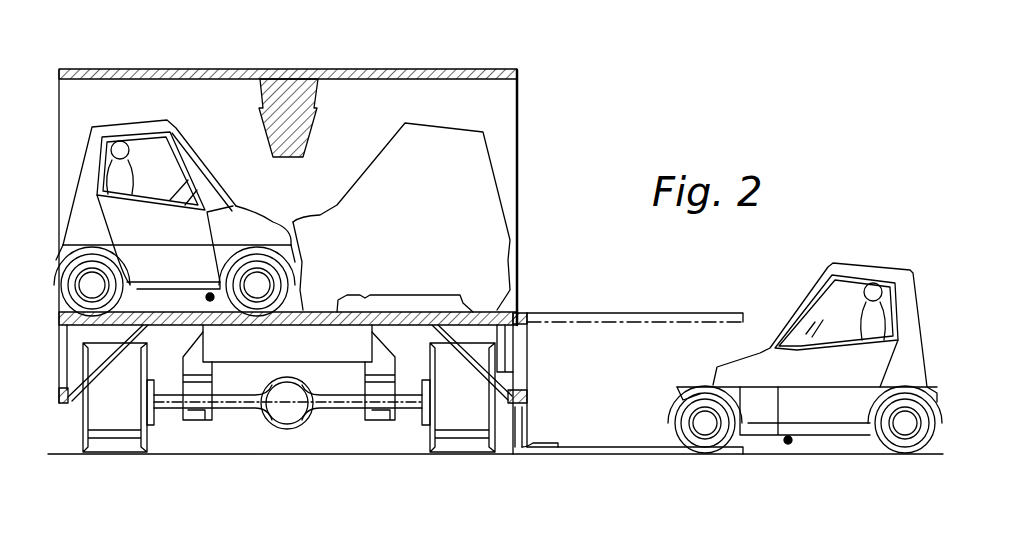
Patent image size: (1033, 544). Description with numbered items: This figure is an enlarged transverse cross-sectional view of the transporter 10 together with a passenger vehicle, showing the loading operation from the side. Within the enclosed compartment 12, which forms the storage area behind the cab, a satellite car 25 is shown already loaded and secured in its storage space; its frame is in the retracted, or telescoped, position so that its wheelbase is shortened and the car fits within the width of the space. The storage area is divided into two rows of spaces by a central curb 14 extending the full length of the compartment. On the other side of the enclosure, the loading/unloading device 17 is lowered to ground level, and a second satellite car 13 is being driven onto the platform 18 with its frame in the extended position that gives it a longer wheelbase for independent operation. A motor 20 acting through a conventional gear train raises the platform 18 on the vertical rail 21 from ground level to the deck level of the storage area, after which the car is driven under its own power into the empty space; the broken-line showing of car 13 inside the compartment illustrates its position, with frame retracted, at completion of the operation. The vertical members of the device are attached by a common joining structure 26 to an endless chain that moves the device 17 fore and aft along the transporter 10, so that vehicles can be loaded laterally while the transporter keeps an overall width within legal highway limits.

The transporter vehicle 10 is at (542, 110).
The enclosed compartment 12 is at (192, 69).
The satellite passenger car 13 is at (917, 297).
The central curb 14 is at (291, 306).
The loading mechanism 17 is at (528, 470).
The platform 18 is at (573, 313).
The motor 20 is at (549, 443).
The vertical rail 21 is at (517, 417).
The satellite car 25 is at (87, 180).
The common joining structure 26 is at (500, 347).